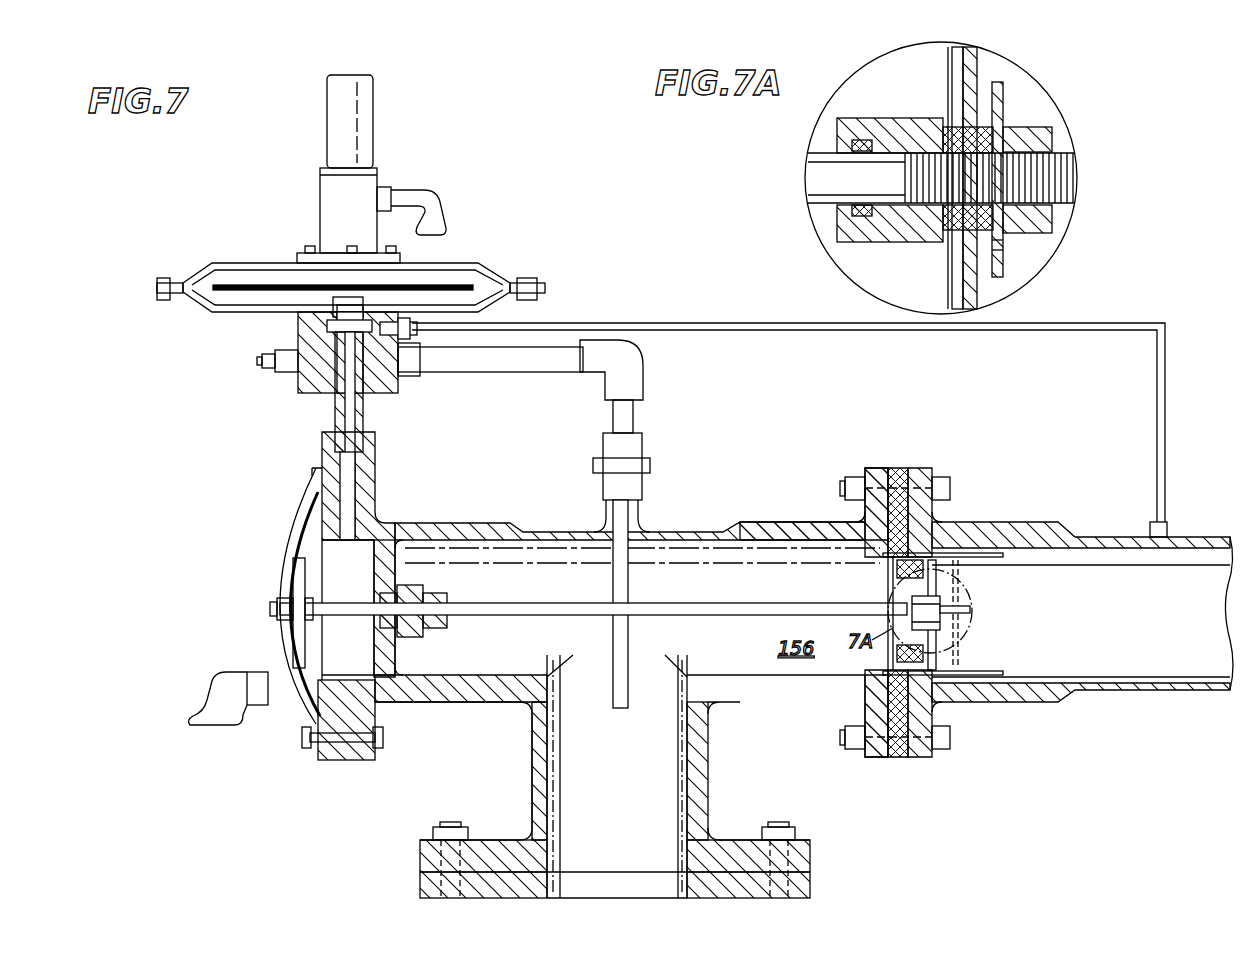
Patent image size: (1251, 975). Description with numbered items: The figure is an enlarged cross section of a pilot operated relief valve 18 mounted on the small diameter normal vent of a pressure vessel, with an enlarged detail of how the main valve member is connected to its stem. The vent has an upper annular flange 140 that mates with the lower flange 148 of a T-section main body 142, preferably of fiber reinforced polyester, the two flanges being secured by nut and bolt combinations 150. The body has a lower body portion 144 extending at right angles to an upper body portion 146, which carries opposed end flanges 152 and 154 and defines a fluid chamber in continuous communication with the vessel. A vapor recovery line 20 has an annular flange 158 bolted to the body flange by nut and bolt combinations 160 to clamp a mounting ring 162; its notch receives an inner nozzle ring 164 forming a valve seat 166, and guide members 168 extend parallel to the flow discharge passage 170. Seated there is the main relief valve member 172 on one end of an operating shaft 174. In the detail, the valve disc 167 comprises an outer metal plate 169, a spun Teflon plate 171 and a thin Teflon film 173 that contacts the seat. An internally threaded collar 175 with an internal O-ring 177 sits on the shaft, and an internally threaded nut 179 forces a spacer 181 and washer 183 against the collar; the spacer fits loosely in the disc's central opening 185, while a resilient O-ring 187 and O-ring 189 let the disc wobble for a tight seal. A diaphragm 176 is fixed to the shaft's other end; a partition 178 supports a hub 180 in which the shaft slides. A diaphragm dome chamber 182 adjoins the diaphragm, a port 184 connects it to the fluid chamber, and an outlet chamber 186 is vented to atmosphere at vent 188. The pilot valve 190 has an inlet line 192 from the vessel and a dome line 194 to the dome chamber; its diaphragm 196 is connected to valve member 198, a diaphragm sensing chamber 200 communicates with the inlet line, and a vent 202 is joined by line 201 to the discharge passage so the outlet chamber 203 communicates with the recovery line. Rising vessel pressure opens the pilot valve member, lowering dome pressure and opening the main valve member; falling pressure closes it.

In FIG. 7, the pilot operated relief valve 18 is at (676, 466).
In FIG. 7, the vapor recovery line 20 is at (1055, 525).
In FIG. 7, the upper annular flange 140 is at (812, 885).
In FIG. 7, the main body 142 is at (676, 532).
In FIG. 7, the lower body portion 144 is at (700, 765).
In FIG. 7, the upper body portion 146 is at (762, 524).
In FIG. 7, the lower flange 148 is at (810, 852).
In FIG. 7, the nut and bolt combinations 150 is at (785, 830).
In FIG. 7, the end flange 152 is at (870, 466).
In FIG. 7, the end flange 154 is at (340, 762).
In FIG. 7, the annular flange 158 is at (916, 760).
In FIG. 7, the nut and bolt combinations 160 is at (948, 742).
In FIG. 7, the mounting ring 162 is at (892, 760).
In FIG. 7, the inner nozzle ring 164 is at (893, 570).
In FIG. 7, the valve seat 166 is at (936, 572).
In FIG. 7A, the valve disc 167 is at (980, 55).
In FIG. 7, the guide members 168 is at (995, 676).
In FIG. 7A, the outer metal plate 169 is at (1003, 86).
In FIG. 7, the flow discharge passage 170 is at (1082, 615).
In FIG. 7A, the Teflon plate 171 is at (947, 62).
In FIG. 7, the main relief valve member 172 is at (945, 622).
In FIG. 7A, the main relief valve member 172 is at (993, 74).
In FIG. 7A, the Teflon film 173 is at (955, 80).
In FIG. 7, the operating shaft 174 is at (732, 603).
In FIG. 7A, the operating shaft 174 is at (1045, 173).
In FIG. 7A, the internally threaded collar 175 is at (862, 230).
In FIG. 7, the diaphragm 176 is at (292, 545).
In FIG. 7A, the internal O-ring 177 is at (870, 125).
In FIG. 7, the partition 178 is at (387, 658).
In FIG. 7A, the internally threaded nut 179 is at (1035, 220).
In FIG. 7, the hub 180 is at (424, 592).
In FIG. 7A, the spacer 181 is at (1035, 135).
In FIG. 7, the diaphragm dome chamber 182 is at (330, 652).
In FIG. 7A, the washer 183 is at (1003, 268).
In FIG. 7, the port 184 is at (392, 682).
In FIG. 7A, the central opening 185 is at (955, 215).
In FIG. 7, the outlet chamber 186 is at (272, 586).
In FIG. 7A, the resilient O-ring 187 is at (962, 127).
In FIG. 7, the vent 188 is at (257, 710).
In FIG. 7A, the O-ring 189 is at (1003, 243).
In FIG. 7, the pilot valve 190 is at (490, 245).
In FIG. 7, the inlet line 192 is at (535, 372).
In FIG. 7, the dome line 194 is at (340, 425).
In FIG. 7, the diaphragm 196 is at (505, 280).
In FIG. 7, the valve member 198 is at (335, 325).
In FIG. 7, the diaphragm sensing chamber 200 is at (510, 292).
In FIG. 7, the line 201 is at (702, 322).
In FIG. 7, the vent 202 is at (410, 352).
In FIG. 7, the outlet chamber 203 is at (340, 298).